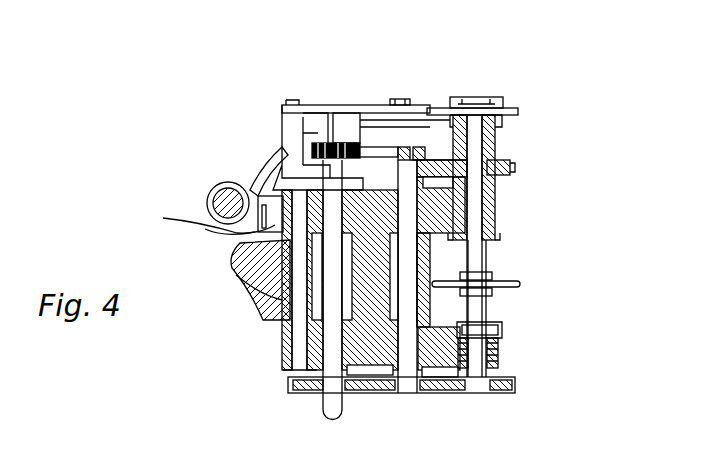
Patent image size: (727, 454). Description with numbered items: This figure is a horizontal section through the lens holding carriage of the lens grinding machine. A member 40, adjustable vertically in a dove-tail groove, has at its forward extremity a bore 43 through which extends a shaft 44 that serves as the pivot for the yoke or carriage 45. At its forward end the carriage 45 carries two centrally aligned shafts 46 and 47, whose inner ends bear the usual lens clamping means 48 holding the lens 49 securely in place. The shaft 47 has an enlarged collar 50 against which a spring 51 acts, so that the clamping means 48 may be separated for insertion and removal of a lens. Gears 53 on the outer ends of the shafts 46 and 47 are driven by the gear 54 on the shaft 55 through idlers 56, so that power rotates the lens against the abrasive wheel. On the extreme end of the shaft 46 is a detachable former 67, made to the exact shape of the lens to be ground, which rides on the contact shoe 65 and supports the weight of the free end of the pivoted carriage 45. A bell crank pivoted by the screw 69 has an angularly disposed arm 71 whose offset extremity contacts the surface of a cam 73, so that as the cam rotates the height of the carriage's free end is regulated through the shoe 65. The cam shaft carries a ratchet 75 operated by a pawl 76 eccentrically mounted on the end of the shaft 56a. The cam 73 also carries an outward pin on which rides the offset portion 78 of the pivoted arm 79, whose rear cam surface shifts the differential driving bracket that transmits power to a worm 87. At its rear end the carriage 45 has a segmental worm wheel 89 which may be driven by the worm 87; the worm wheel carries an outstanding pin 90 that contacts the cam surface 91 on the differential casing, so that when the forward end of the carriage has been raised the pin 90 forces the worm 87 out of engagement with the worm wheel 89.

The member 40 is at (234, 262).
The bore 43 is at (245, 250).
The shaft 44 is at (292, 298).
The carriage 45 is at (368, 282).
The shaft 46 is at (486, 248).
The shaft 47 is at (488, 310).
The lens clamping means 48 is at (492, 275).
The lens 49 is at (522, 285).
The collar 50 is at (500, 332).
The spring 51 is at (500, 356).
The gears 53 is at (512, 168).
The gear 54 is at (347, 388).
The shaft 55 is at (300, 365).
The idlers 56 is at (437, 162).
The shaft 56a is at (414, 247).
The contact shoe 65 is at (498, 101).
The former 67 is at (518, 111).
The screw 69 is at (397, 99).
The arm 71 is at (378, 106).
The cam 73 is at (338, 116).
The ratchet 75 is at (320, 143).
The pawl 76 is at (400, 150).
The offset portion 78 is at (300, 120).
The pivoted arm 79 is at (270, 196).
The worm 87 is at (212, 194).
The segmental worm wheel 89 is at (258, 182).
The pin 90 is at (208, 225).
The cam surface 91 is at (270, 222).